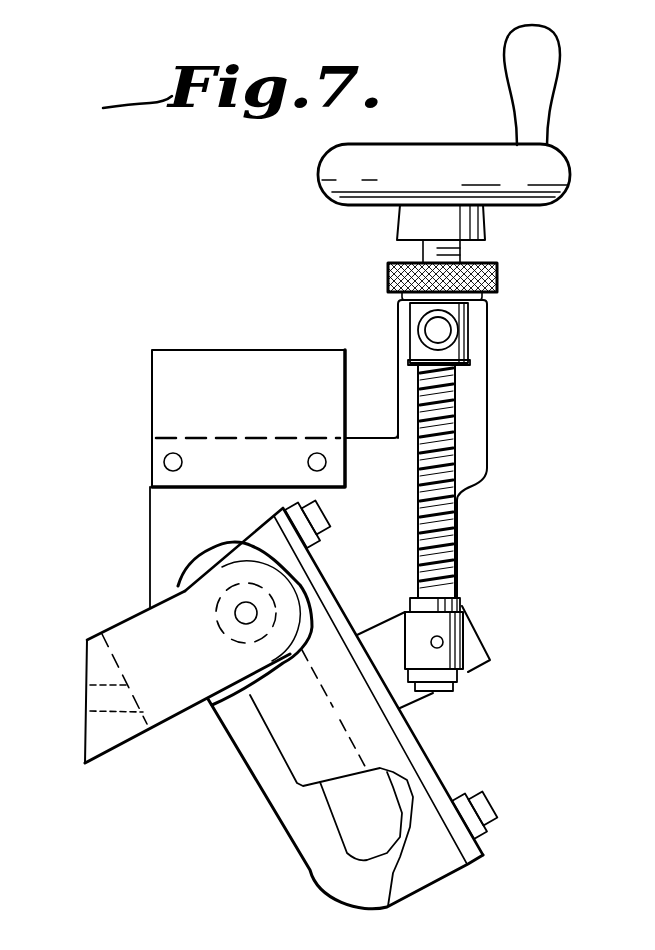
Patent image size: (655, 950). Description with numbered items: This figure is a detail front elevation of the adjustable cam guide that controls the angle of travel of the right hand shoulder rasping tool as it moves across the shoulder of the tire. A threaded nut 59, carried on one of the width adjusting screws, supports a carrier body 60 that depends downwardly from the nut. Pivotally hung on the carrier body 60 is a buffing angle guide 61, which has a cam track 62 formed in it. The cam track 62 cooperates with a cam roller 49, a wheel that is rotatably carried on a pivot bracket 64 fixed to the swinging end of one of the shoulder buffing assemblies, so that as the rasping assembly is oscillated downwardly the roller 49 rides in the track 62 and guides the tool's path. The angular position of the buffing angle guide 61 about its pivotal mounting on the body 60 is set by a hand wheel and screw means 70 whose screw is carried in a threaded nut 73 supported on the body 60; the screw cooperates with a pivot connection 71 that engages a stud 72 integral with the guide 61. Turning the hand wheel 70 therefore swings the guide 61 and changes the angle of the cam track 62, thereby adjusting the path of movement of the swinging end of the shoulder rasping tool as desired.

The cam roller 49 is at (244, 633).
The threaded nut 59 is at (310, 342).
The carrier body 60 is at (160, 542).
The buffing angle guide 61 is at (450, 858).
The cam track 62 is at (340, 802).
The pivot bracket 64 is at (123, 633).
The hand wheel and screw means 70 is at (573, 163).
The pivot connection 71 is at (450, 657).
The stud 72 is at (487, 651).
The threaded nut 73 is at (462, 319).